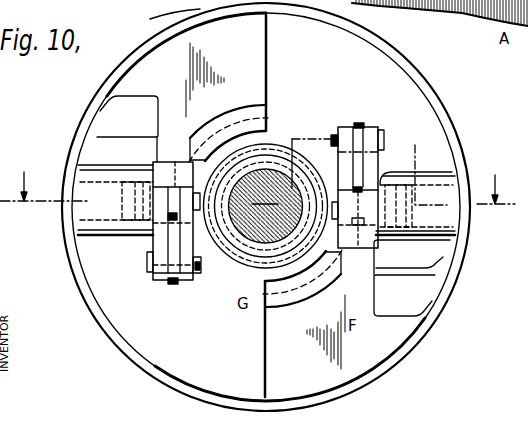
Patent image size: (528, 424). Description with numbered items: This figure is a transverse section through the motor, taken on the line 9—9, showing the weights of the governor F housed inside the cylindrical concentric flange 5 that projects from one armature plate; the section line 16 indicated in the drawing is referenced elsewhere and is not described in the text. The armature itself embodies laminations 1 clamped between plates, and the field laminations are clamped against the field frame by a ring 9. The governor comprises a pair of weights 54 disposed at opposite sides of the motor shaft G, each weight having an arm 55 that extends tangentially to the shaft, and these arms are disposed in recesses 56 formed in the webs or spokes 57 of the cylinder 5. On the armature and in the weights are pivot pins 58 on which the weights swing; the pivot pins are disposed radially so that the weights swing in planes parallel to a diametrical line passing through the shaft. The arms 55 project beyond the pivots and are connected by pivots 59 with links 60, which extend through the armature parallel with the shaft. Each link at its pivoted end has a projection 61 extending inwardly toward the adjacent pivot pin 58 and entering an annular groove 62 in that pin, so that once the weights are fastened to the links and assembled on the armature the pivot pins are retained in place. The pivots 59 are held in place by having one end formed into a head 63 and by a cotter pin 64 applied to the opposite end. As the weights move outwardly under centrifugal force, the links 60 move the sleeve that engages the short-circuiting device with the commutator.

The laminations 1 is at (471, 15).
The cylindrical concentric flange 5 is at (418, 331).
The ring 9 is at (257, 183).
The rim flange 16 is at (175, 9).
The weights 54 is at (256, 68).
The arm 55 is at (153, 246).
The recesses 56 is at (155, 192).
The webs or spokes 57 is at (434, 183).
The pivot pins 58 is at (113, 238).
The pivots 59 is at (336, 133).
The links 60 is at (172, 284).
The projection 61 is at (172, 234).
The annular groove 62 is at (175, 162).
The head 63 is at (150, 264).
The cotter pin 64 is at (201, 262).